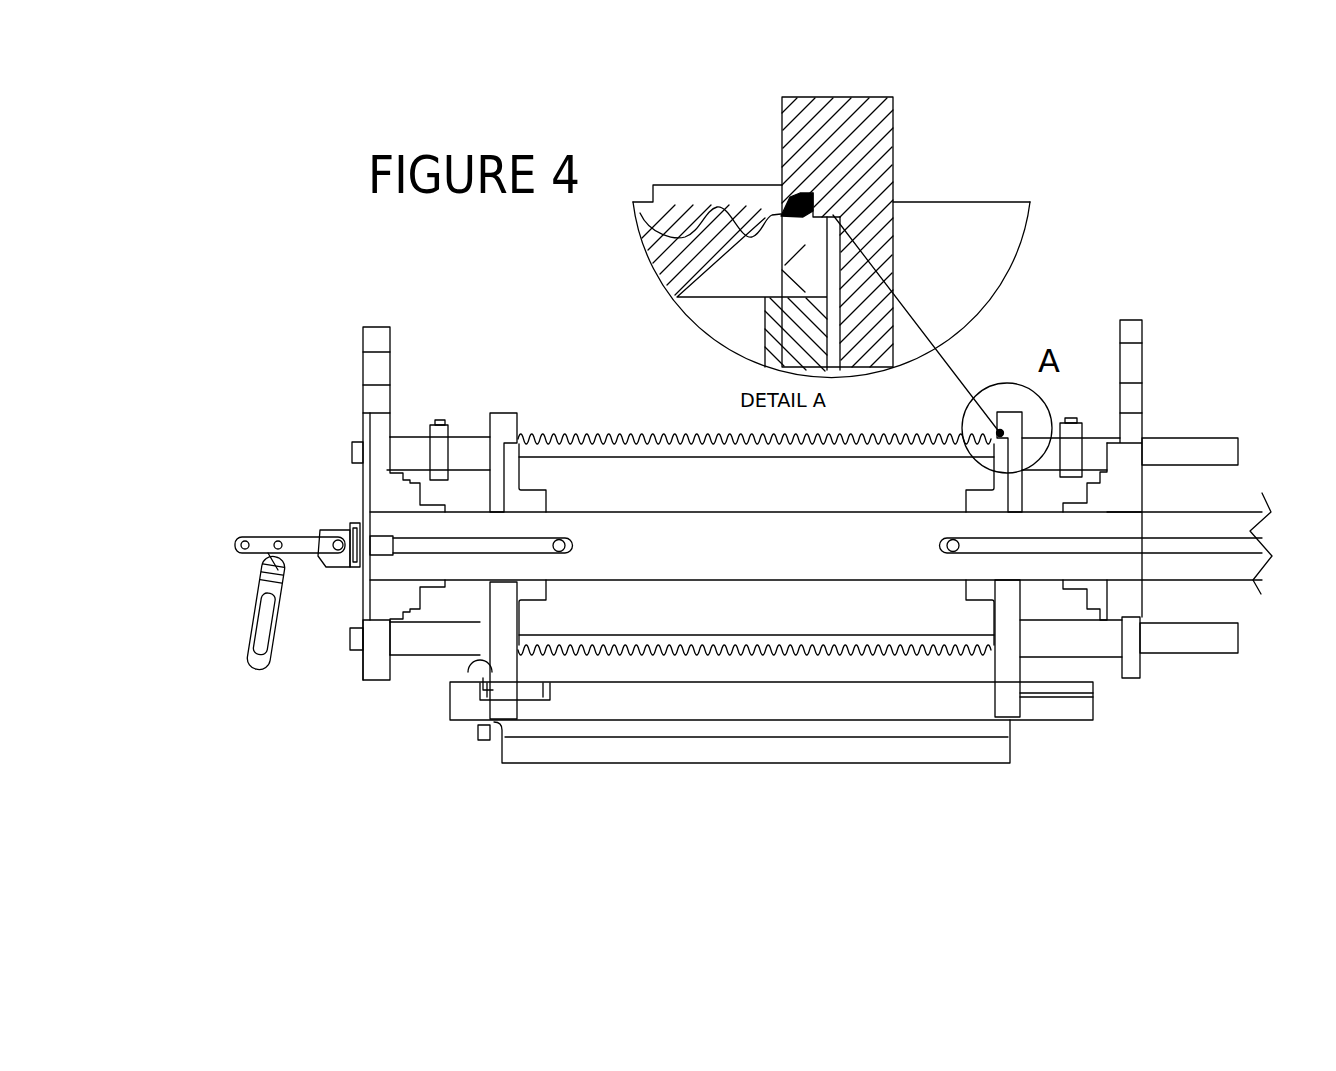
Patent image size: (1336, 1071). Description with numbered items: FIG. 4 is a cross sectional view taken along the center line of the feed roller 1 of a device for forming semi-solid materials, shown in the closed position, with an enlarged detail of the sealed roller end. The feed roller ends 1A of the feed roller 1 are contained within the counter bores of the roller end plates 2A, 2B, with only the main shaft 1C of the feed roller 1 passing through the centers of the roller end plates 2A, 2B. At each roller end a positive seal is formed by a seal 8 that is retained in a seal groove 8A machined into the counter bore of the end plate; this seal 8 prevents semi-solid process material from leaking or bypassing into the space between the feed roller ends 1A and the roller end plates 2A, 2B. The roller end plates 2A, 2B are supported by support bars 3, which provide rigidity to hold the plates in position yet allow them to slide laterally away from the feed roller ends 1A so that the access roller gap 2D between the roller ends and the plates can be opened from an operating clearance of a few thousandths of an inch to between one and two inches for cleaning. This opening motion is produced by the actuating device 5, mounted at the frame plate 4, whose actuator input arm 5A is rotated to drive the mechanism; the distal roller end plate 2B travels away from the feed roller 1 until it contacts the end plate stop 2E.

The feed roller 1 is at (738, 639).
The feed roller end 1A is at (773, 215).
The main shaft 1C is at (1225, 565).
The proximal roller end plate 2A is at (503, 678).
The distal roller end plate 2B is at (857, 133).
The roller gap 2D is at (833, 215).
The end plate stop 2E is at (438, 438).
The support bar 3 is at (472, 458).
The frame plate 4 is at (377, 650).
The actuating device 5 is at (322, 550).
The actuator input arm 5A is at (257, 663).
The seal 8 is at (800, 194).
The seal groove 8A is at (807, 207).